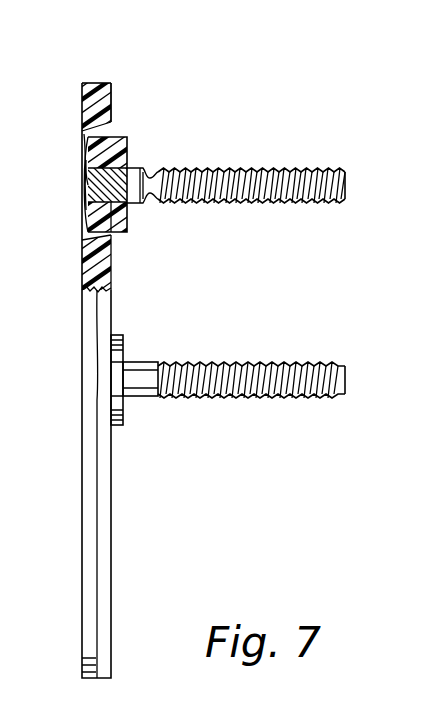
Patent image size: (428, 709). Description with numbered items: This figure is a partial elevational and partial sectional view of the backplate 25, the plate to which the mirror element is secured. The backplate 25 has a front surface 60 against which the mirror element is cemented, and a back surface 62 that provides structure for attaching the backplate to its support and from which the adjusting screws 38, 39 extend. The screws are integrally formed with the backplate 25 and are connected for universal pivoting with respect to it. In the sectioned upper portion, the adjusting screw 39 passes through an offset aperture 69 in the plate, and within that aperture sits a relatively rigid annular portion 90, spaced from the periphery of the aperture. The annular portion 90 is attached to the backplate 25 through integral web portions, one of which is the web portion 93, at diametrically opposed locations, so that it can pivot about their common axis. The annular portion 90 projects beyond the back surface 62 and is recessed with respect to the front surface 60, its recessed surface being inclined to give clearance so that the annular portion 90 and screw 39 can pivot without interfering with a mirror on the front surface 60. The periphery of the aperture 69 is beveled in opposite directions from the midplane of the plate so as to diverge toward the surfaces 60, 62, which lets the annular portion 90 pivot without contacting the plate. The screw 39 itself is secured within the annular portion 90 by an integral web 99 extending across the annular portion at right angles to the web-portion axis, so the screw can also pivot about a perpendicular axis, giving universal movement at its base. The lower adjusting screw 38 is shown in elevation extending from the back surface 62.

The backplate 25 is at (93, 76).
The front surface 60 is at (82, 107).
The back surface 62 is at (110, 120).
The offset aperture 69 is at (84, 137).
The annular portion 90 is at (124, 138).
The web portion 93 is at (90, 186).
The web 99 is at (120, 214).
The adjusting screw 39 is at (300, 168).
The adjusting screw 38 is at (288, 362).